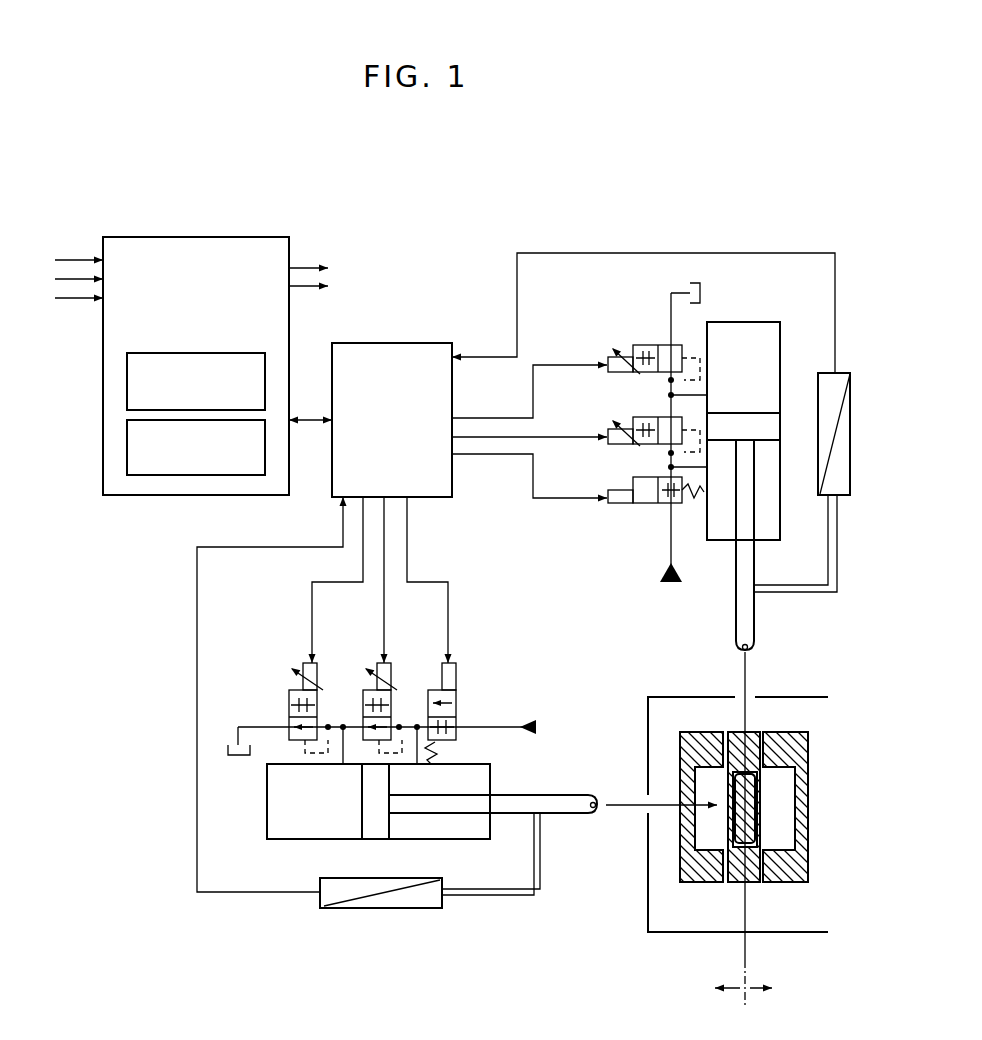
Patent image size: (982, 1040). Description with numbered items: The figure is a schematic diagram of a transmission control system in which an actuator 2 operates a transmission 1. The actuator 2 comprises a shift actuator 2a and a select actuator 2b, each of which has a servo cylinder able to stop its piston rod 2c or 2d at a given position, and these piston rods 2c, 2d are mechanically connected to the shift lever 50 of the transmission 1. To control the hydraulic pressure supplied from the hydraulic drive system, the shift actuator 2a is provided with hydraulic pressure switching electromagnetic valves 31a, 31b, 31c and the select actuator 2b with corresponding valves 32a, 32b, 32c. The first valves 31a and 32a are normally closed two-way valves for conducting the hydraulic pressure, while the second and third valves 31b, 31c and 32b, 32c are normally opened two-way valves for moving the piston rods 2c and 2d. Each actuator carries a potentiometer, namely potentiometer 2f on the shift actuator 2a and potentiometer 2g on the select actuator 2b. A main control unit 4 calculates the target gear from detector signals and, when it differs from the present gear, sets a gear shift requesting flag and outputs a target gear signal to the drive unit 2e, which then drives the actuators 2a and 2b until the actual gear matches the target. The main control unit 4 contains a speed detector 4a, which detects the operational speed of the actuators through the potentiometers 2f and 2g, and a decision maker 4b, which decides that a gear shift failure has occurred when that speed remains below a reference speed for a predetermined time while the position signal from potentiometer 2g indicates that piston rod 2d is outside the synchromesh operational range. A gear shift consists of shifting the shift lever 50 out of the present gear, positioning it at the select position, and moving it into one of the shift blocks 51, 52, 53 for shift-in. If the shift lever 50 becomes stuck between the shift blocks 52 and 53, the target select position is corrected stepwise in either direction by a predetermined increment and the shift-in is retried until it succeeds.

The transmission 1 is at (625, 710).
The actuator 2 is at (433, 280).
The shift actuator 2a is at (503, 912).
The select actuator 2b is at (752, 318).
The piston rod 2c is at (562, 813).
The piston rod 2d is at (738, 609).
The drive unit 2e is at (360, 343).
The potentiometer 2f is at (397, 905).
The potentiometer 2g is at (818, 470).
The main control unit 4 is at (293, 250).
The speed detector 4a is at (127, 374).
The decision maker 4b is at (127, 435).
The first hydraulic pressure switching electromagnetic valve 31a is at (428, 705).
The second hydraulic pressure switching electromagnetic valve 31b is at (362, 708).
The third hydraulic pressure switching electromagnetic valve 31c is at (288, 708).
The first hydraulic pressure switching electromagnetic valve 32a is at (625, 503).
The second hydraulic pressure switching electromagnetic valve 32b is at (633, 422).
The third hydraulic pressure switching electromagnetic valve 32c is at (633, 347).
The shift lever 50 is at (757, 798).
The shift block 51 is at (686, 855).
The shift block 52 is at (733, 732).
The shift block 53 is at (808, 838).